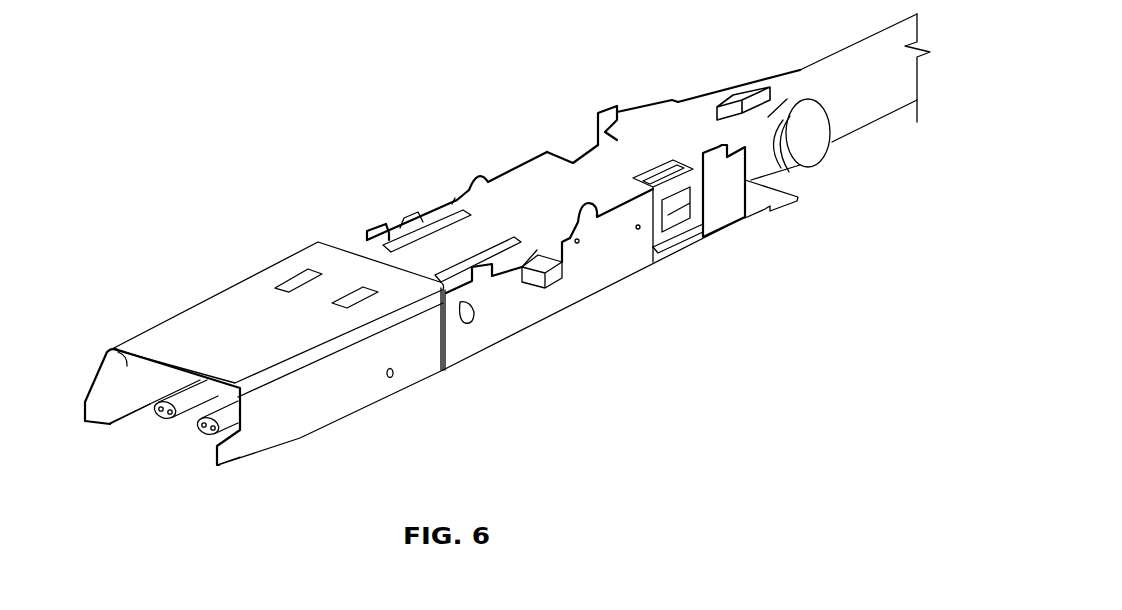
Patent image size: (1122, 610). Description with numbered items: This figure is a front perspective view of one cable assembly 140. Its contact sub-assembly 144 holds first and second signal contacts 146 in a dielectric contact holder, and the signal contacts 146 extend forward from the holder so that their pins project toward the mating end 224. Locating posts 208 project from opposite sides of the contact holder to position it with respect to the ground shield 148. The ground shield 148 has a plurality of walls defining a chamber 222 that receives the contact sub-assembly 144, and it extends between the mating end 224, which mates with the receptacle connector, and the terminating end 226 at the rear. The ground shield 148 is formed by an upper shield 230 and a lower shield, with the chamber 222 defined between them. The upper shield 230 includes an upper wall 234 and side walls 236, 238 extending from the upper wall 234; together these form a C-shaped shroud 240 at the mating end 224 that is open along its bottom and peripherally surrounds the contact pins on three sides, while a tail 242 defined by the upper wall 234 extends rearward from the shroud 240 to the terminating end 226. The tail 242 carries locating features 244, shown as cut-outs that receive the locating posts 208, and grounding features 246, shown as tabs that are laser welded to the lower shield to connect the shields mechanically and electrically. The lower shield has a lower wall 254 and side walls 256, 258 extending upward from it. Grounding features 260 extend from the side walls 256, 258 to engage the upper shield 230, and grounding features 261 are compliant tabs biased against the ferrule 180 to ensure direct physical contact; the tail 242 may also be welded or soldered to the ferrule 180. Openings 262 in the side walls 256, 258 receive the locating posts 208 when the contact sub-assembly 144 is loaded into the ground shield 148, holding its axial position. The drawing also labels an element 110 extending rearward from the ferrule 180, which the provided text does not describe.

The cable 110 is at (869, 18).
The cable assembly 140 is at (370, 152).
The contact sub-assembly 144 is at (156, 447).
The signal contacts 146 is at (160, 415).
The ground shield 148 is at (303, 405).
The ferrule 180 is at (813, 150).
The locating posts 208 is at (555, 277).
The chamber 222 is at (128, 382).
The mating end 224 is at (103, 362).
The terminating end 226 is at (798, 190).
The upper shield 230 is at (508, 185).
The upper wall 234 is at (262, 310).
The side wall 236 is at (360, 377).
The side wall 238 is at (147, 373).
The shroud 240 is at (233, 455).
The tail 242 is at (583, 172).
The locating features 244 is at (535, 240).
The grounding features 246 is at (462, 295).
The lower wall 254 is at (656, 262).
The side wall 256 is at (645, 248).
The side wall 258 is at (453, 203).
The grounding features 260 is at (725, 200).
The grounding features 261 is at (373, 230).
The openings 262 is at (522, 277).